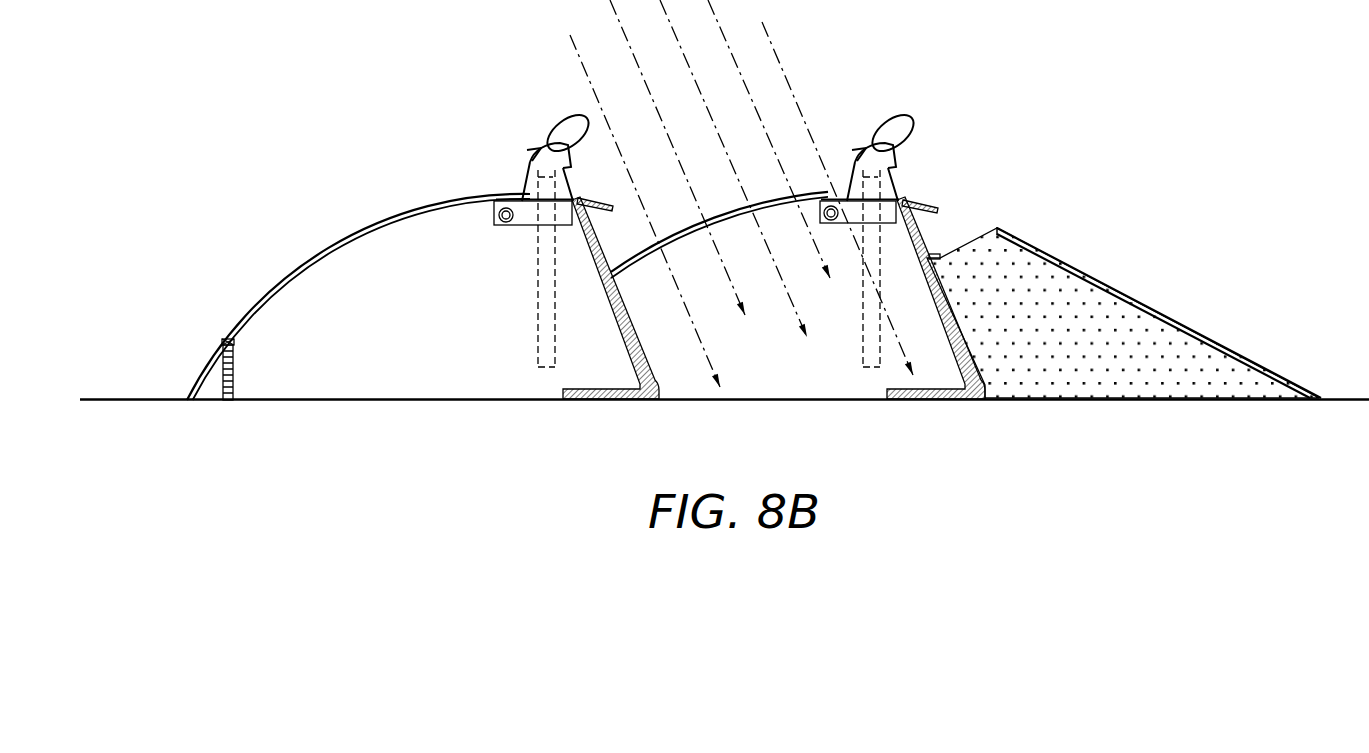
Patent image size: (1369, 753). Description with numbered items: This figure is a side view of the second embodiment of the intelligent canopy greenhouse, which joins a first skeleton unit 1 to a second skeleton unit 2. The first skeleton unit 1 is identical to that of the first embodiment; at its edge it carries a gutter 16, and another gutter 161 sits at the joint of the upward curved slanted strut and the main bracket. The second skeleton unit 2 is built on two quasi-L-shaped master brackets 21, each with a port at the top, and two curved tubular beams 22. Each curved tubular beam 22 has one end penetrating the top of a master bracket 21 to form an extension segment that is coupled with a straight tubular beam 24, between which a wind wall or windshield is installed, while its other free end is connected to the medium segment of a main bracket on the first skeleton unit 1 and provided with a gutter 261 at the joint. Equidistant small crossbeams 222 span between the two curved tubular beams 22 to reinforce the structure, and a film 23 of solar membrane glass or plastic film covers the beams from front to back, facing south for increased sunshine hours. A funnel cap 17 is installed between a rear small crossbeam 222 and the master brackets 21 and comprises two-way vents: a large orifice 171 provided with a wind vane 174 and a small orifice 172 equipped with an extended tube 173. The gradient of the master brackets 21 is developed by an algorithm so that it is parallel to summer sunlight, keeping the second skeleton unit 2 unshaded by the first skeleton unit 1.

The first skeleton unit 1 is at (392, 260).
The gutter 16 is at (214, 345).
The gutter 161 is at (606, 265).
The funnel cap 17 is at (729, 202).
The large orifice 171 is at (573, 153).
The small orifice 172 is at (527, 151).
The extended tube 173 is at (540, 338).
The wind vane 174 is at (570, 127).
The second skeleton unit 2 is at (966, 232).
The master bracket 21 is at (1124, 295).
The curved tubular beam 22 is at (827, 223).
The small crossbeam 222 is at (767, 204).
The film 23 is at (723, 203).
The straight tubular beam 24 is at (1222, 351).
The gutter 261 is at (935, 255).